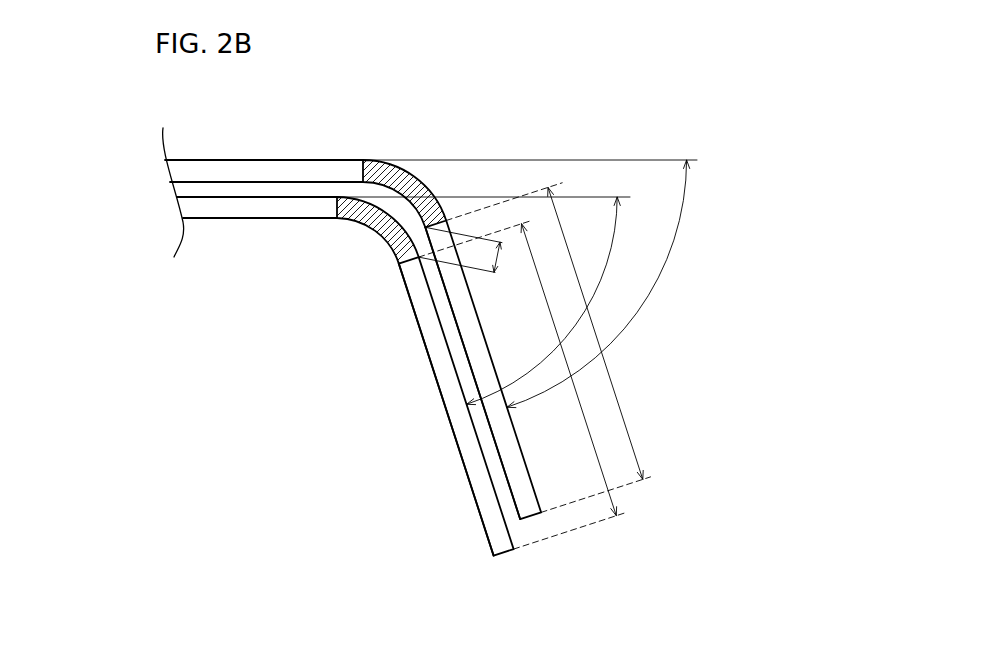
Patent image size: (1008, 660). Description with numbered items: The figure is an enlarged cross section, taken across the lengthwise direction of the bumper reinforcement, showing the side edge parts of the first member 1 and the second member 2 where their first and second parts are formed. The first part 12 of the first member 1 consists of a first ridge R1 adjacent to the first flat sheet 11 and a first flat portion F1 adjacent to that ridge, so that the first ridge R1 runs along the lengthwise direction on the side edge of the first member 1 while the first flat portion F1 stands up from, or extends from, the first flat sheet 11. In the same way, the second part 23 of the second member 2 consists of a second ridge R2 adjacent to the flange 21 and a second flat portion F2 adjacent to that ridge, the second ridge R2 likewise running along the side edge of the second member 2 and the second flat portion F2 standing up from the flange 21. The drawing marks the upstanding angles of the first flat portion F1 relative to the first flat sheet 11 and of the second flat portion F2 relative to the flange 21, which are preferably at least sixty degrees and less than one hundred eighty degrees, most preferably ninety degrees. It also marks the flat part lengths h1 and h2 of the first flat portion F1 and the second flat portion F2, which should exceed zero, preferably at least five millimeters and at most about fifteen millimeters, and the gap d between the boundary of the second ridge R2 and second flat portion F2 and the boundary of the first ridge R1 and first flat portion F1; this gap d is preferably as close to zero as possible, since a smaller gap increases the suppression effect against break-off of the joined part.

The first member 1 is at (393, 334).
The first flat sheet 11 is at (300, 167).
The first part 12 is at (524, 405).
The first ridge R1 is at (415, 170).
The second member 2 is at (345, 396).
The flange 21 is at (287, 212).
The second part 23 is at (452, 432).
The second ridge R2 is at (368, 232).
The first flat portion F1 is at (460, 332).
The second flat portion F2 is at (458, 443).
The gap between first and second parts d is at (471, 258).
The length of the first flat portion h1 is at (548, 348).
The length of the second flat portion h2 is at (523, 385).